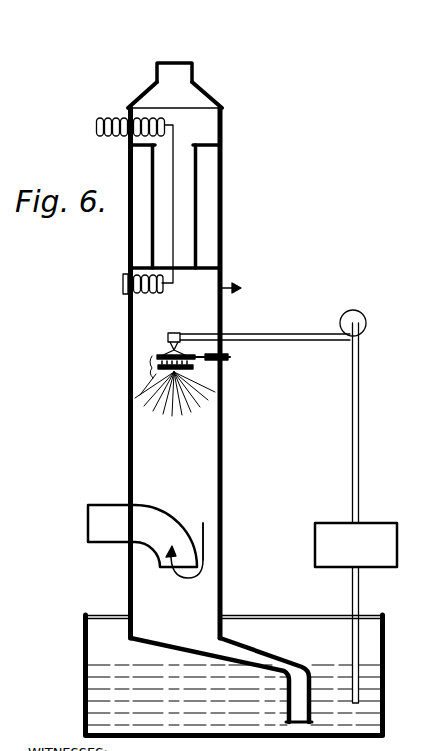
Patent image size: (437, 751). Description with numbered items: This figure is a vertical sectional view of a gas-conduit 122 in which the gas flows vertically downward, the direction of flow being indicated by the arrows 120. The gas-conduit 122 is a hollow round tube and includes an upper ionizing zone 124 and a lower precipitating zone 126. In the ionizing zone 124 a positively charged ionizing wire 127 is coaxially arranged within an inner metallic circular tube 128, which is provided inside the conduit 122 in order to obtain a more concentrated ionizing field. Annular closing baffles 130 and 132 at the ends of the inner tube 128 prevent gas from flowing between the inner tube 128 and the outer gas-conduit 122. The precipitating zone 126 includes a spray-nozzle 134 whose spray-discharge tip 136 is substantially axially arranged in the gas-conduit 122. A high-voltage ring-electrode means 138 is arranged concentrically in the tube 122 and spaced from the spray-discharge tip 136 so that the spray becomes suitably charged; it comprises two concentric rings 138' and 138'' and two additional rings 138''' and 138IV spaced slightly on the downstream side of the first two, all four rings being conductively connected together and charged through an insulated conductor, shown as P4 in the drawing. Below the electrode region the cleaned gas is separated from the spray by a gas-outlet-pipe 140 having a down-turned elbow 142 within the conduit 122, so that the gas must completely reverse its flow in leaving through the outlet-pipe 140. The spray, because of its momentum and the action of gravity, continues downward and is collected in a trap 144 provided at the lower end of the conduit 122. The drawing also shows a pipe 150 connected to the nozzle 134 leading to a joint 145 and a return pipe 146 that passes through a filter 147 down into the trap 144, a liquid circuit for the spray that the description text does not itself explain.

The gas-flow arrows 120 is at (173, 44).
The gas-conduit 122 is at (222, 127).
The ionizing zone 124 is at (183, 225).
The precipitating zone 126 is at (138, 405).
The ionizing wire 127 is at (175, 188).
The inner metallic circular tube 128 is at (195, 202).
The annular closing baffle 130 is at (218, 146).
The annular closing baffle 132 is at (210, 268).
The spray-nozzle 134 is at (172, 333).
The spray-discharge tip 136 is at (170, 345).
The high-voltage ring-electrode means 138 is at (175, 371).
The concentric ring 138' is at (139, 349).
The concentric ring 138'' is at (135, 360).
The additional ring 138''' is at (119, 390).
The additional ring 138IV is at (150, 372).
The gas-outlet-pipe 140 is at (105, 505).
The down-turned elbow 142 is at (152, 553).
The trap 144 is at (233, 722).
The pipe elbow joint 145 is at (366, 318).
The return pipe 146 is at (362, 485).
The filter 147 is at (393, 523).
The supply pipe 150 is at (263, 331).
The pressure connection P4 is at (241, 368).